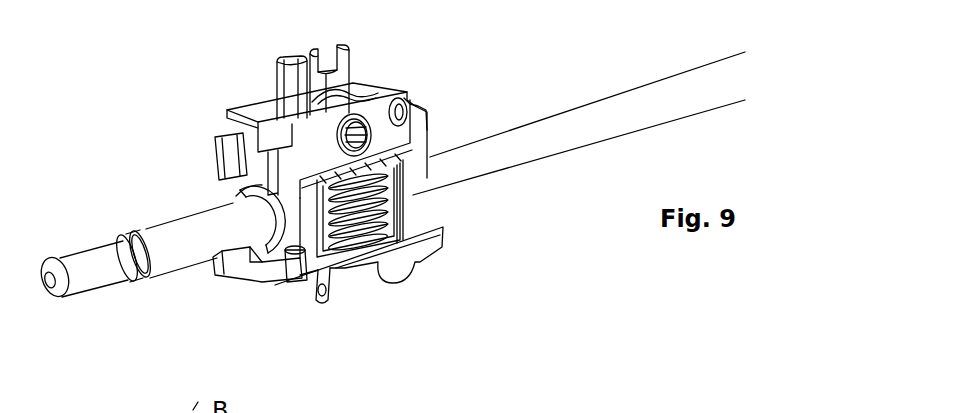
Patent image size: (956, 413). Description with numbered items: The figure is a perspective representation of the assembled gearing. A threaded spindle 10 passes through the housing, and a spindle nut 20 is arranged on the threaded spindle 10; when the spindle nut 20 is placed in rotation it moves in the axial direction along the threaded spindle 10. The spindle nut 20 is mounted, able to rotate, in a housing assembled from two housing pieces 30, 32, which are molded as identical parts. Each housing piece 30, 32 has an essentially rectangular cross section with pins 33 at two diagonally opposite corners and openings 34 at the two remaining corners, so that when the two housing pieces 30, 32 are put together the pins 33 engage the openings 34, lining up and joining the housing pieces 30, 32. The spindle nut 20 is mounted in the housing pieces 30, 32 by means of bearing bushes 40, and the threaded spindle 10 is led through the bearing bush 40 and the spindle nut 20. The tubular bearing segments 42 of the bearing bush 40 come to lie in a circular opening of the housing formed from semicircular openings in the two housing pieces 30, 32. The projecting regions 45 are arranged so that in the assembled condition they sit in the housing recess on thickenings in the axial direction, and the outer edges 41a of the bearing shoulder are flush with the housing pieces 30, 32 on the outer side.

The threaded spindle 10 is at (677, 107).
The spindle nut 20 is at (415, 198).
The housing piece 30 is at (260, 110).
The housing piece 32 is at (425, 137).
The pin 33 is at (413, 108).
The opening 34 is at (407, 98).
The bearing bush 40 is at (418, 183).
The outer edge of the bearing shoulder 41a is at (420, 176).
The tubular bearing segment 42 is at (234, 190).
The projecting region 45 is at (427, 146).